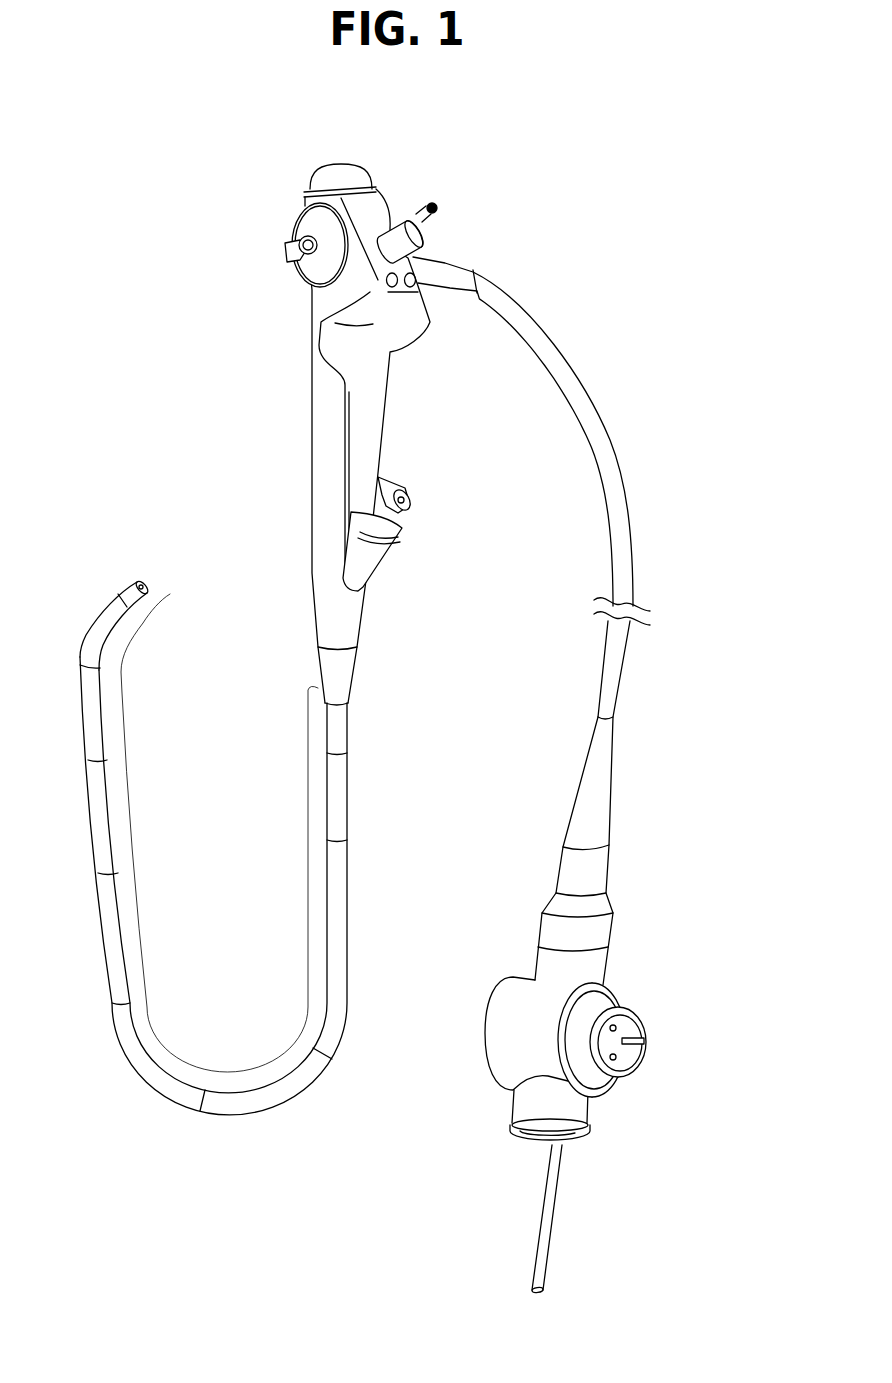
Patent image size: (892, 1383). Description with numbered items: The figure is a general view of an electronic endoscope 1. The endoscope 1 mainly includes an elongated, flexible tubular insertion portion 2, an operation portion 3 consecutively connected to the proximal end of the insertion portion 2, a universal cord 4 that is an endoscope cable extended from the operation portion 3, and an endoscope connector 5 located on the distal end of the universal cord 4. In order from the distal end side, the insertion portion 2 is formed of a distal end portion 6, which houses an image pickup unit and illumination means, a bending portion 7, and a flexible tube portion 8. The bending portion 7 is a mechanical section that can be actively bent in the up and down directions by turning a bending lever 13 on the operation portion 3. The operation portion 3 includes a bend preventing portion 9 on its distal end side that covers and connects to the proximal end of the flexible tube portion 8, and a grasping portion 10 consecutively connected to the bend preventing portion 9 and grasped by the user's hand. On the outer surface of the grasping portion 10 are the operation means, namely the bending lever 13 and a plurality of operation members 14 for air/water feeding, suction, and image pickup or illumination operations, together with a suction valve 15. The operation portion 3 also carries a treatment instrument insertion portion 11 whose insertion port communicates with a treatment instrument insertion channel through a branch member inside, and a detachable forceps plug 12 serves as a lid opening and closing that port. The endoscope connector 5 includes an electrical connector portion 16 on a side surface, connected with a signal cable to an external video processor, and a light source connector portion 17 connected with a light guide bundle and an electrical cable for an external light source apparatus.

The endoscope 1 is at (134, 171).
The insertion portion 2 is at (227, 1068).
The operation portion 3 is at (256, 440).
The universal cord 4 is at (593, 403).
The endoscope connector 5 is at (487, 1026).
The distal end portion 6 is at (127, 577).
The bending portion 7 is at (92, 667).
The flexible tube portion 8 is at (292, 1098).
The bend preventing portion 9 is at (357, 665).
The grasping portion 10 is at (382, 414).
The treatment instrument insertion portion 11 is at (383, 562).
The forceps plug 12 is at (398, 520).
The bending lever 13 is at (284, 262).
The operation members 14 is at (395, 288).
The suction valve 15 is at (416, 203).
The electrical connector portion 16 is at (652, 1053).
The light source connector portion 17 is at (573, 1176).